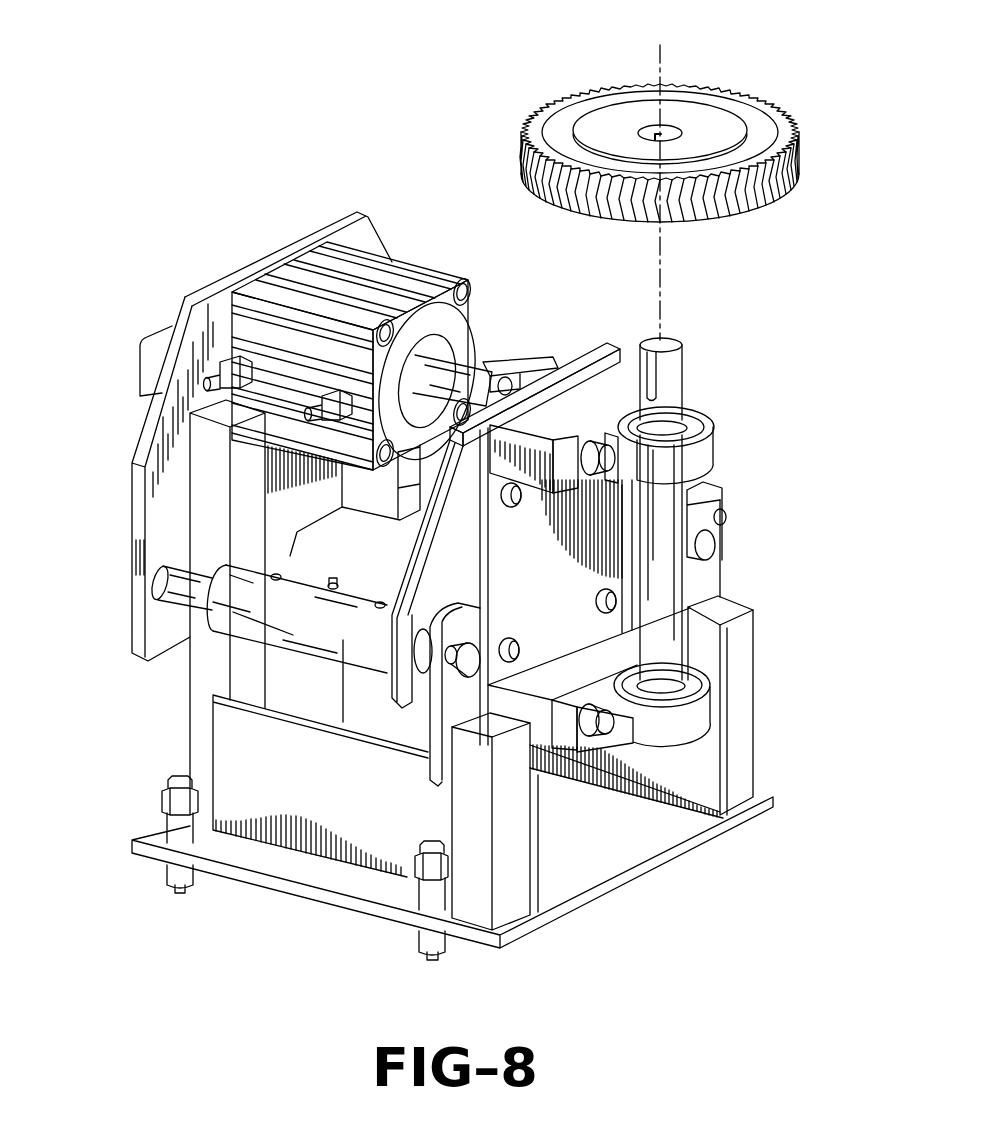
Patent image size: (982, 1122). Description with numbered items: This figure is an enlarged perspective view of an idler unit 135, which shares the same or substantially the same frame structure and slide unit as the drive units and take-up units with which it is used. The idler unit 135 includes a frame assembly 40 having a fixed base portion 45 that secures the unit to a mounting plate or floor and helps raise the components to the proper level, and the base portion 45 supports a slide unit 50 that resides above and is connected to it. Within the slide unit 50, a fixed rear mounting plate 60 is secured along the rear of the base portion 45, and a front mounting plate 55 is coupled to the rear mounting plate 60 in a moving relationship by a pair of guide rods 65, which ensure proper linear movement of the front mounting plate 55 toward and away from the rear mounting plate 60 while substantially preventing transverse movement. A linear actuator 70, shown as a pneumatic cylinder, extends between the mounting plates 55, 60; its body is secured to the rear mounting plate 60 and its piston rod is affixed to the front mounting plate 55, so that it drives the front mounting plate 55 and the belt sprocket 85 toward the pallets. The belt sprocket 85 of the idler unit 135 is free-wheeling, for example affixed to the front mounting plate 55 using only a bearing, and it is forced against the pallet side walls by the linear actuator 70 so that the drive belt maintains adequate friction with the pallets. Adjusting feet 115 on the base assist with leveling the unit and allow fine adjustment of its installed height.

The idler unit 135 is at (243, 118).
The belt sprocket 85 is at (742, 98).
The rear mounting plate 60 is at (363, 234).
The frame assembly 40 is at (128, 416).
The linear actuator 70 is at (310, 257).
The front mounting plate 55 is at (586, 364).
The guide rods 65 is at (178, 587).
The slide unit 50 is at (297, 663).
The adjusting feet 115 is at (172, 806).
The fixed base portion 45 is at (507, 887).